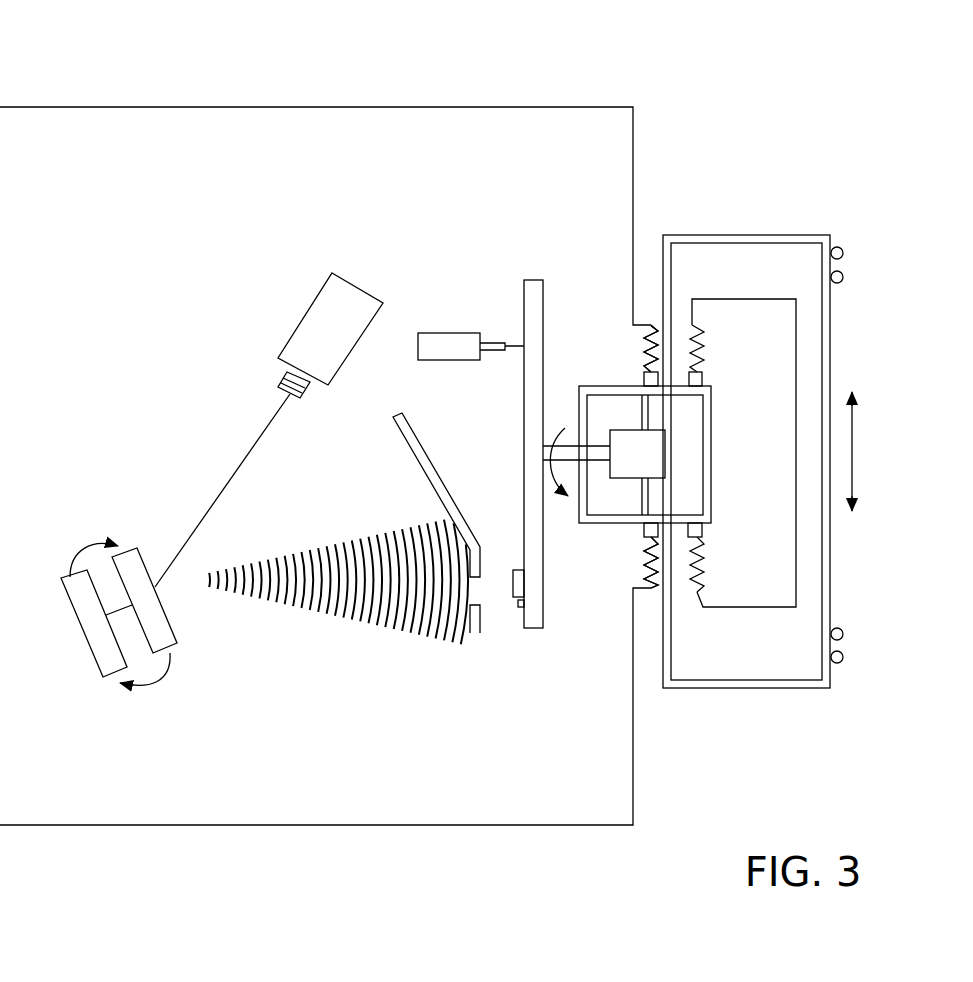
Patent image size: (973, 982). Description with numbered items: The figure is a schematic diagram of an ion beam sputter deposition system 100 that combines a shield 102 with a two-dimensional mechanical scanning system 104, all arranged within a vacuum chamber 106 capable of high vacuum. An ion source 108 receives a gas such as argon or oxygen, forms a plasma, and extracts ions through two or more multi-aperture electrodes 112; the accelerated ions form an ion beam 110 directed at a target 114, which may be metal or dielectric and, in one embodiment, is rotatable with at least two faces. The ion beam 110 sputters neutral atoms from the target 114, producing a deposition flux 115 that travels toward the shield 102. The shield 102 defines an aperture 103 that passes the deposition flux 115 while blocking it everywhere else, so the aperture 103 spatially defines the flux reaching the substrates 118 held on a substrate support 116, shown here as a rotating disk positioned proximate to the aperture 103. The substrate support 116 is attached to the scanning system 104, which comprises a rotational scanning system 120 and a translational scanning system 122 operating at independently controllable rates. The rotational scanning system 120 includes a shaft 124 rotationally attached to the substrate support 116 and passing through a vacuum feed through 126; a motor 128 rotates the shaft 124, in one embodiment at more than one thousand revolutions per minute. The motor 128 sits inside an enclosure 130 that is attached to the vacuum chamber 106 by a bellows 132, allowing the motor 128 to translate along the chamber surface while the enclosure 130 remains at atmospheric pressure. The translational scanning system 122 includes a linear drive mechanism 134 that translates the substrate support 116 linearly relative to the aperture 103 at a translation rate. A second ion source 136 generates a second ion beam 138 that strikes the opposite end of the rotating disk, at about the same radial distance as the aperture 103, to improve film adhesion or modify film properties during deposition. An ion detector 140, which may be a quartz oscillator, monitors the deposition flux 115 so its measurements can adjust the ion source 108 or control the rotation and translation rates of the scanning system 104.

The ion beam sputter deposition system 100 is at (491, 56).
The shield 102 is at (427, 457).
The aperture 103 is at (486, 599).
The two-dimensional mechanical scanning system 104 is at (686, 192).
The vacuum chamber 106 is at (605, 812).
The ion source 108 is at (310, 308).
The ion beam 110 is at (248, 457).
The multi-aperture electrodes 112 is at (312, 393).
The target 114 is at (194, 632).
The deposition flux 115 is at (346, 645).
The substrate support 116 is at (522, 527).
The substrates 118 is at (513, 583).
The rotational scanning system 120 is at (600, 385).
The translational scanning system 122 is at (864, 292).
The shaft 124 is at (552, 440).
The vacuum feed through 126 is at (583, 455).
The motor 128 is at (667, 443).
The enclosure 130 is at (693, 463).
The bellows 132 is at (650, 557).
The linear drive mechanism 134 is at (846, 657).
The second ion source 136 is at (448, 332).
The second ion beam 138 is at (515, 345).
The ion detector 140 is at (520, 606).